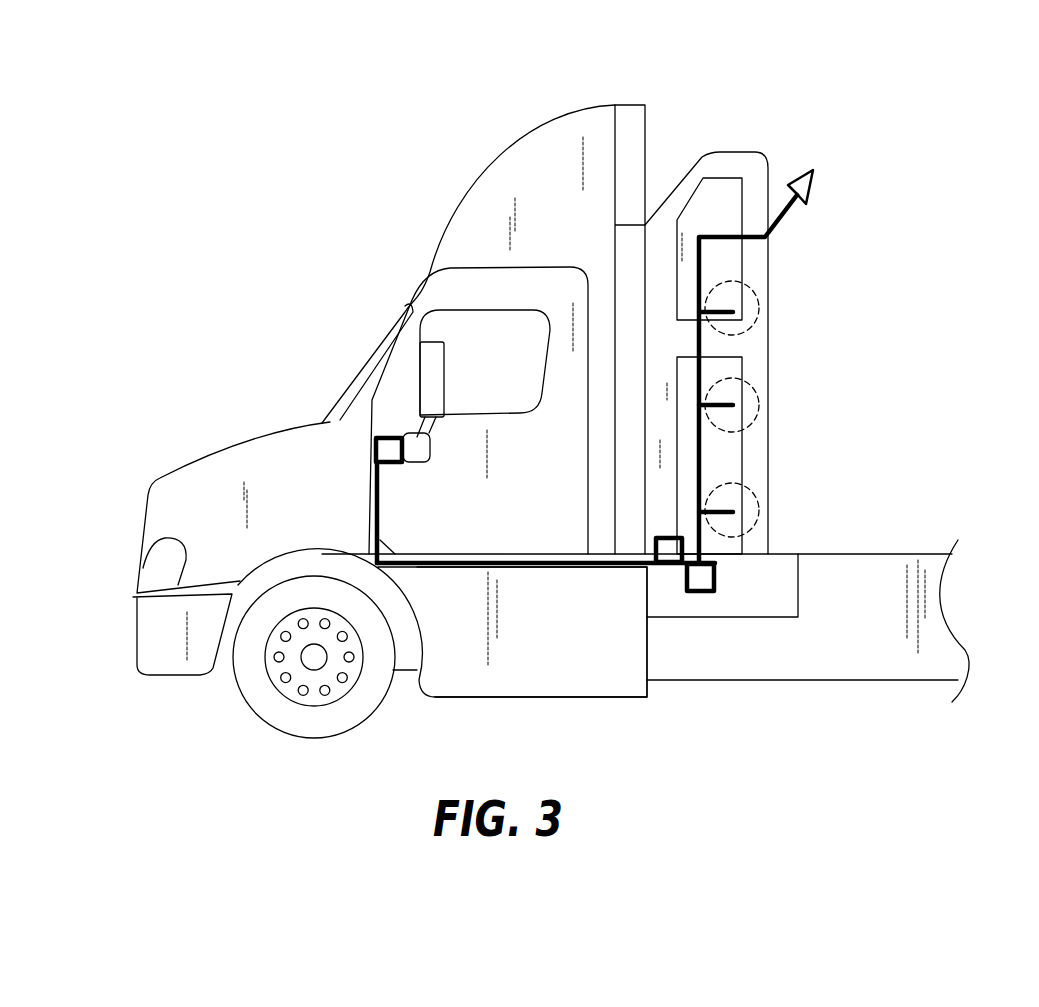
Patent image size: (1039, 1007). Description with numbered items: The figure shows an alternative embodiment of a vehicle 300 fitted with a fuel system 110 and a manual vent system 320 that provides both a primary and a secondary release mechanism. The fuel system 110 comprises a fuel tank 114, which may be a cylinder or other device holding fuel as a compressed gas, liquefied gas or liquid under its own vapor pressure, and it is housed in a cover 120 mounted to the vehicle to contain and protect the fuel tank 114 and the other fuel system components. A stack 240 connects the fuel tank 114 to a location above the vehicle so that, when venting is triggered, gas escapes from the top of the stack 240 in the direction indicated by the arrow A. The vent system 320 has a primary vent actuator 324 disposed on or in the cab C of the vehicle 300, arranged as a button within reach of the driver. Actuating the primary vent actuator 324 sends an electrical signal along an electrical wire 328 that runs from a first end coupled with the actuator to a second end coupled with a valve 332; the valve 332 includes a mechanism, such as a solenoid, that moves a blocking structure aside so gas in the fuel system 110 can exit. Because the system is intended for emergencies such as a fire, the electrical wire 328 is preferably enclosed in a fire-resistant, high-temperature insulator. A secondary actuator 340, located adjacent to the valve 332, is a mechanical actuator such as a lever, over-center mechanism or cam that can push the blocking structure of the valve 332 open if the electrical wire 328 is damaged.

The vehicle 300 is at (268, 125).
The cover 120 is at (748, 165).
The stack 240 is at (732, 235).
The fuel system 110 is at (783, 305).
The arrow A is at (797, 205).
The cab C is at (412, 393).
The primary vent actuator 324 is at (375, 452).
The electrical wire 328 is at (430, 570).
The secondary actuator 340 is at (673, 537).
The fuel tank 114 is at (758, 502).
The valve 332 is at (715, 577).
The vent system 320 is at (580, 588).